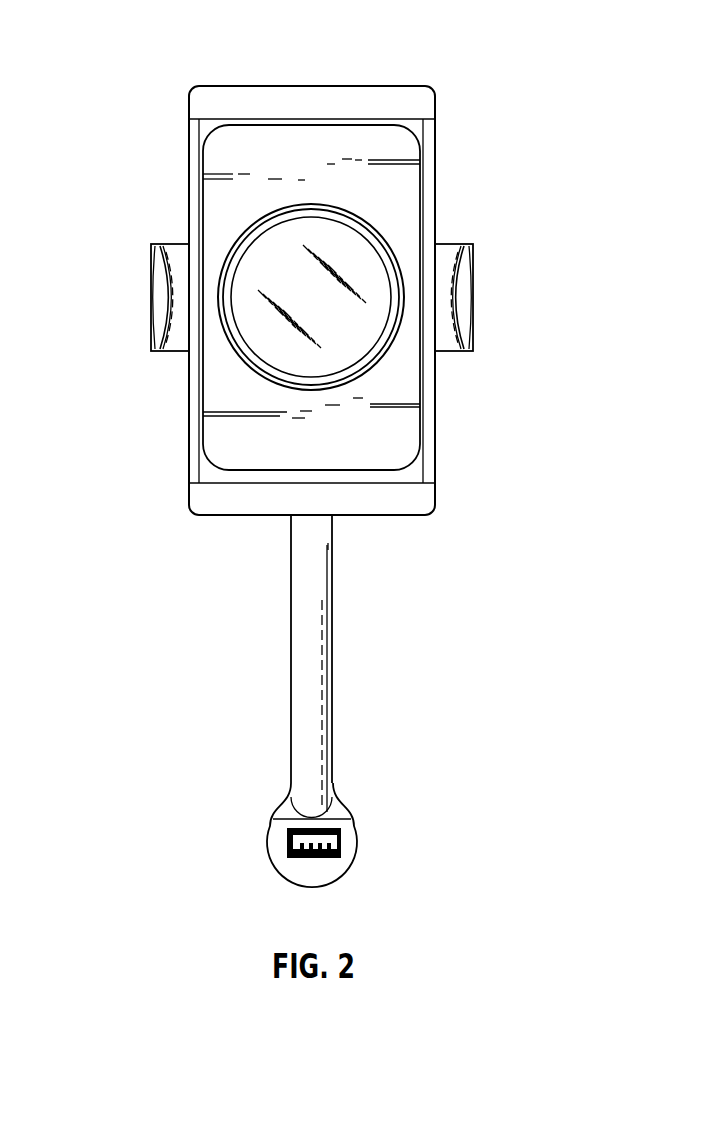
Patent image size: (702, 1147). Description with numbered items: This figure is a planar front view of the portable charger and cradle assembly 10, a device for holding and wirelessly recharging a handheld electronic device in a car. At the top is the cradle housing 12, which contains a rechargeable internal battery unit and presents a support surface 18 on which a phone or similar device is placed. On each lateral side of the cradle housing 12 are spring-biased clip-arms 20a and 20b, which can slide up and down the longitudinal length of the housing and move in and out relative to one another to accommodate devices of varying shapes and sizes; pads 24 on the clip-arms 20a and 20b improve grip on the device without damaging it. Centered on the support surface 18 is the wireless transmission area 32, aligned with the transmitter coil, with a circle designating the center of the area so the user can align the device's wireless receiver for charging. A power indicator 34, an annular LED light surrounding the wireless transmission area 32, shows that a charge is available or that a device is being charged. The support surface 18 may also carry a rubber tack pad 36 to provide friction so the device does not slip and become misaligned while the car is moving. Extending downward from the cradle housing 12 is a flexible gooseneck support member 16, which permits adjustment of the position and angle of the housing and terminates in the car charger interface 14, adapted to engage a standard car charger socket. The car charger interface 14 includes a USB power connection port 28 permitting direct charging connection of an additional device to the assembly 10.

The portable charger and cradle assembly 10 is at (440, 48).
The cradle housing 12 is at (235, 96).
The car charger interface 14 is at (318, 880).
The support member 16 is at (303, 678).
The support surface 18 is at (222, 437).
The first clip-arm 20a is at (150, 300).
The second clip-arm 20b is at (475, 310).
The pads 24 is at (178, 262).
The power connection port 28 is at (277, 851).
The wireless transmission area 32 is at (270, 250).
The power indicator 34 is at (329, 197).
The rubber tack pad 36 is at (394, 152).